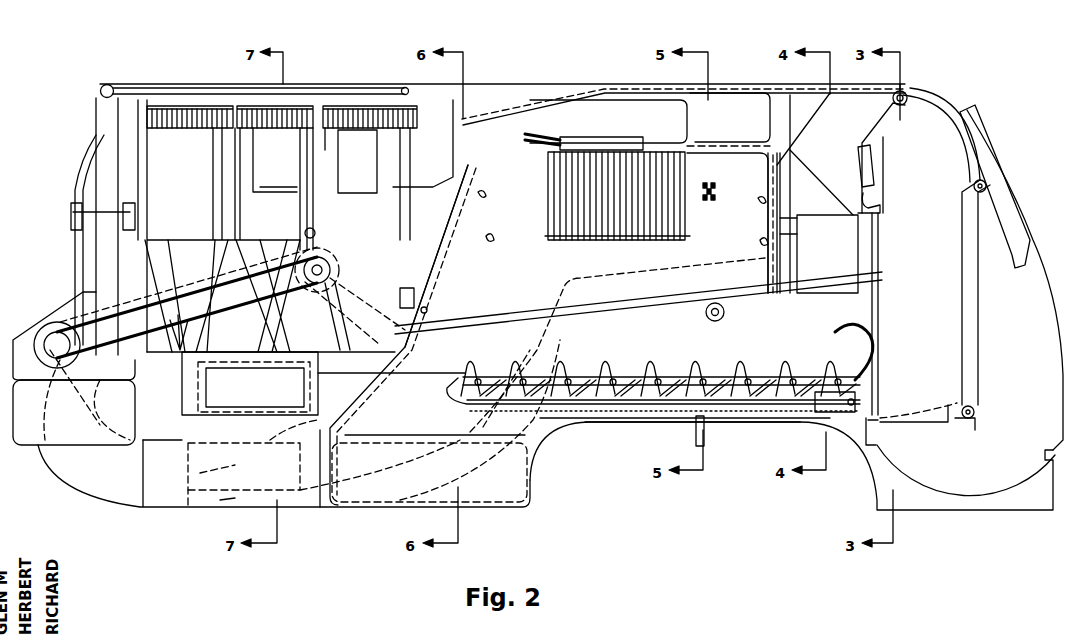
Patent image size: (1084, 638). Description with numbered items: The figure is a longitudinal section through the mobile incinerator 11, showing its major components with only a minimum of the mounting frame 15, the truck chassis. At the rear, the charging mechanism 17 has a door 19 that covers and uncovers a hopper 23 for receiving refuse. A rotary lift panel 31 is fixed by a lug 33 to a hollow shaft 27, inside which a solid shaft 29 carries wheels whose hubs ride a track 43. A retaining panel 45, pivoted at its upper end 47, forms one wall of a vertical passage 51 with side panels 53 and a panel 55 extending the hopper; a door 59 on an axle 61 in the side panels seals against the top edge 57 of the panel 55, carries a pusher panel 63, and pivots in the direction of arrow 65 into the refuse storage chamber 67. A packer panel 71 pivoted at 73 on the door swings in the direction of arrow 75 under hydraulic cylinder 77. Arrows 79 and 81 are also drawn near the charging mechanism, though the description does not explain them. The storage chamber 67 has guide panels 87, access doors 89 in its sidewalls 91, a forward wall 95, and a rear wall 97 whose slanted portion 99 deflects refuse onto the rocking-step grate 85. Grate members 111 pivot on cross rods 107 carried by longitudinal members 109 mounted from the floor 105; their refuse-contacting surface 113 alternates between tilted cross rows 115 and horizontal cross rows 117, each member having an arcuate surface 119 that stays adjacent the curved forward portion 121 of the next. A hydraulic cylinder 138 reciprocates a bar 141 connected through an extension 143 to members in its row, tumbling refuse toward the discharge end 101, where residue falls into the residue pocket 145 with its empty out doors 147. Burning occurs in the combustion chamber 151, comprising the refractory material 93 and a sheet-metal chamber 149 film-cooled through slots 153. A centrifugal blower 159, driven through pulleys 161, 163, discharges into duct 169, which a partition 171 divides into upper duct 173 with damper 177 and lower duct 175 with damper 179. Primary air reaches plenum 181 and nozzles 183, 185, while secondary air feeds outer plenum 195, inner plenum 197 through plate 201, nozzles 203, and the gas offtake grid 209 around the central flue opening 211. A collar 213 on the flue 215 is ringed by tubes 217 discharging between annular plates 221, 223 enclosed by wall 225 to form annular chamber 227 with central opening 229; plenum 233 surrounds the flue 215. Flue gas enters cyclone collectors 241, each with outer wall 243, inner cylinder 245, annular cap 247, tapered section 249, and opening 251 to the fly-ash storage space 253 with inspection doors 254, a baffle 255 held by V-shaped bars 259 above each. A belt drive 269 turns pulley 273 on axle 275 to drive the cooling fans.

The incinerator 11 is at (726, 22).
The mounting frame 15 is at (694, 446).
The charging mechanism 17 is at (1030, 192).
The door 19 is at (1028, 225).
The hopper 23 is at (1006, 495).
The hollow shaft 27 is at (962, 428).
The solid shaft 29 is at (980, 416).
The rotary lift panel 31 is at (910, 420).
The lug 33 is at (957, 425).
The track 43 is at (980, 303).
The retaining panel 45 is at (980, 376).
The upper end 47 is at (968, 188).
The vertical passage 51 is at (880, 355).
The side panels 53 is at (906, 308).
The panel 55 is at (880, 330).
The top edge 57 is at (878, 218).
The door 59 is at (871, 132).
The axle 61 is at (903, 92).
The pusher panel 63 is at (962, 155).
The arrow 65 is at (845, 203).
The refuse storage chamber 67 is at (792, 172).
The packer panel 71 is at (878, 175).
The pivot 73 is at (878, 204).
The arrow 75 is at (887, 145).
The hydraulic cylinder 77 is at (865, 165).
The motion arrow 79 is at (932, 385).
The motion arrow 81 is at (970, 320).
The grate 85 is at (712, 350).
The guide panels 87 is at (816, 118).
The access doors 89 is at (818, 258).
The sidewalls 91 is at (789, 198).
The refractory material 93 is at (784, 321).
The forward wall 95 is at (792, 218).
The rear wall 97 is at (858, 278).
The slanted portion 99 is at (866, 320).
The discharge end 101 is at (452, 392).
The floor 105 is at (612, 432).
The cross rods 107 is at (642, 366).
The longitudinal members 109 is at (750, 425).
The grate members 111 is at (580, 378).
The surface 113 is at (505, 364).
The cross rows 115 is at (592, 362).
The cross rows 117 is at (680, 366).
The arcuate surface 119 is at (470, 364).
The forward portion 121 is at (547, 358).
The hydraulic cylinder 138 is at (835, 401).
The bar 141 is at (716, 430).
The extension 143 is at (568, 452).
The residue pocket 145 is at (522, 495).
The empty out doors 147 is at (762, 228).
The chamber 149 is at (698, 160).
The combustion chamber 151 is at (652, 324).
The slots 153 is at (702, 182).
The centrifugal blower 159 is at (84, 497).
The pulley 161 is at (48, 333).
The pulley 163 is at (95, 430).
The duct 169 is at (160, 510).
The partition 171 is at (268, 487).
The upper duct 173 is at (262, 438).
The lower duct 175 is at (292, 514).
The damper 177 is at (238, 470).
The damper 179 is at (228, 512).
The plenum 181 is at (403, 293).
The air nozzle 183 is at (436, 298).
The air nozzle 185 is at (725, 312).
The outer plenum 195 is at (790, 234).
The inner plenum 197 is at (432, 262).
The plate 201 is at (455, 380).
The air nozzles 203 is at (482, 195).
The gas offtake grid 209 is at (538, 217).
The central flue opening 211 is at (556, 134).
The collar 213 is at (560, 138).
The flue 215 is at (607, 123).
The tubes 217 is at (683, 252).
The annular plate 221 is at (552, 245).
The annular plate 223 is at (545, 247).
The wall 225 is at (546, 240).
The annular chamber 227 is at (672, 246).
The central opening 229 is at (595, 245).
The plenum 233 is at (604, 95).
The cyclone-type dust collectors 241 is at (172, 191).
The outer cylindrical wall 243 is at (326, 229).
The inner hollow cylinder 245 is at (337, 182).
The annular cap 247 is at (328, 142).
The tapered section 249 is at (384, 258).
The opening 251 is at (343, 340).
The fly-ash storage space 253 is at (347, 381).
The inspection doors 254 is at (262, 390).
The baffle 255 is at (335, 105).
The V-shaped bars 259 is at (175, 108).
The belt drive 269 is at (240, 312).
The pulley 273 is at (305, 231).
The axle 275 is at (334, 276).